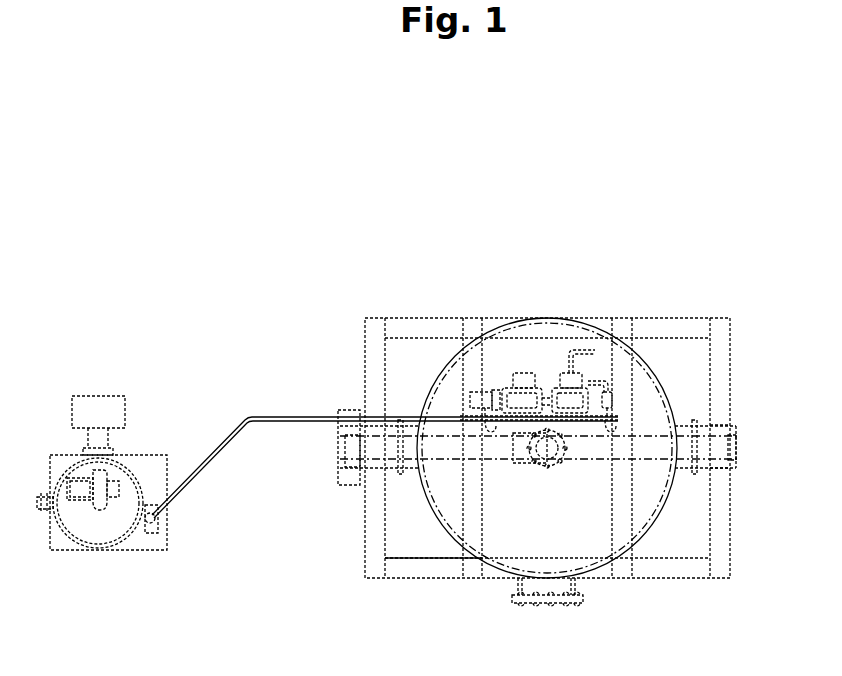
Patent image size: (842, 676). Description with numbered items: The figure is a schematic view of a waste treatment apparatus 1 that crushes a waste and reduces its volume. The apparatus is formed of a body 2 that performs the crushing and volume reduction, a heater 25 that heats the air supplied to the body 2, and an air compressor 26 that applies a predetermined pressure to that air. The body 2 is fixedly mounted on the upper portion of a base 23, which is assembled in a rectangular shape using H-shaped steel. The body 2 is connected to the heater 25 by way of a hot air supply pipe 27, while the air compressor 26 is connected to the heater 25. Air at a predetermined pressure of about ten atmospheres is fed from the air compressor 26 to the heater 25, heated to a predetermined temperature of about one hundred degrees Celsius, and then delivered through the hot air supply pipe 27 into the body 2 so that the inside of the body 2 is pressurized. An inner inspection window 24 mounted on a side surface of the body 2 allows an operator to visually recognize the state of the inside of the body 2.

The waste treatment apparatus 1 is at (570, 274).
The body 2 is at (593, 325).
The base 23 is at (725, 512).
The inner inspection window 24 is at (553, 605).
The heater 25 is at (107, 551).
The air compressor 26 is at (109, 396).
The hot air supply pipe 27 is at (281, 417).